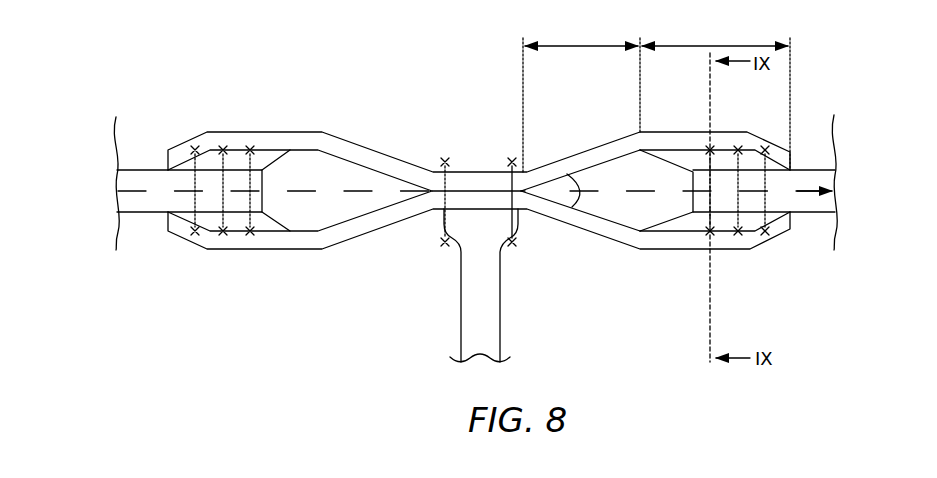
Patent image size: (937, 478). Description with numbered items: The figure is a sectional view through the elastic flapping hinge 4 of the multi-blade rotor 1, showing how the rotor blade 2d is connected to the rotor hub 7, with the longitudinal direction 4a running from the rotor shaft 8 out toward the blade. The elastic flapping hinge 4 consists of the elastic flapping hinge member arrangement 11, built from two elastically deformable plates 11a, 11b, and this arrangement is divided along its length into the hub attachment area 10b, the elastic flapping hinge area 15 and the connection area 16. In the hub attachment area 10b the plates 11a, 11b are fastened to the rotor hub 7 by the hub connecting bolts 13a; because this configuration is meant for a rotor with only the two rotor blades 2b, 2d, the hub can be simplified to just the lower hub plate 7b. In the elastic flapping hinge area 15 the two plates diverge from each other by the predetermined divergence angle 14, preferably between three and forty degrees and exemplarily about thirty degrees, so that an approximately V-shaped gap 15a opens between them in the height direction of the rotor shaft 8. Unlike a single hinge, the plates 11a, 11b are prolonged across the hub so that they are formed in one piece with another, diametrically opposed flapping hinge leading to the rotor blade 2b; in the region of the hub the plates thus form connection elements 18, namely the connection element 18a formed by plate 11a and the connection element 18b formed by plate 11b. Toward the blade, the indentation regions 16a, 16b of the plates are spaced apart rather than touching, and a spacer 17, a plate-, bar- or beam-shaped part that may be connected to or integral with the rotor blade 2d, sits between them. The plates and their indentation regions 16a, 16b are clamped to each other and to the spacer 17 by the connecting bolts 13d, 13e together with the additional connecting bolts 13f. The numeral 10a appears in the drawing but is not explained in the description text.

The multi-blade rotor 1 is at (341, 80).
The rotor blade 2b is at (121, 164).
The rotor blade 2d is at (830, 164).
The elastic flapping hinge 4 is at (625, 131).
The longitudinal direction 4a is at (813, 180).
The rotor hub 7 is at (475, 147).
The lower hub plate 7b is at (498, 218).
The rotor shaft 8 is at (499, 320).
The upper joint 10a is at (512, 157).
The hub attachment area 10b is at (518, 199).
The elastic flapping hinge member arrangement 11 is at (603, 142).
The elastically deformable plate 11a is at (541, 168).
The elastically deformable plate 11b is at (598, 236).
The hub connecting bolts 13a is at (518, 216).
The connecting bolts 13d is at (705, 324).
The connecting bolts 13e is at (756, 232).
The additional connecting bolts 13f is at (782, 216).
The predetermined divergence angle 14 is at (582, 178).
The elastic flapping hinge area 15 is at (553, 43).
The V-shaped gap 15a is at (646, 214).
The connection area 16 is at (690, 43).
The indentation region 16a is at (676, 164).
The indentation region 16b is at (676, 218).
The spacer 17 is at (810, 214).
The connection elements 18 is at (496, 166).
The connection element 18a is at (463, 182).
The connection element 18b is at (472, 200).